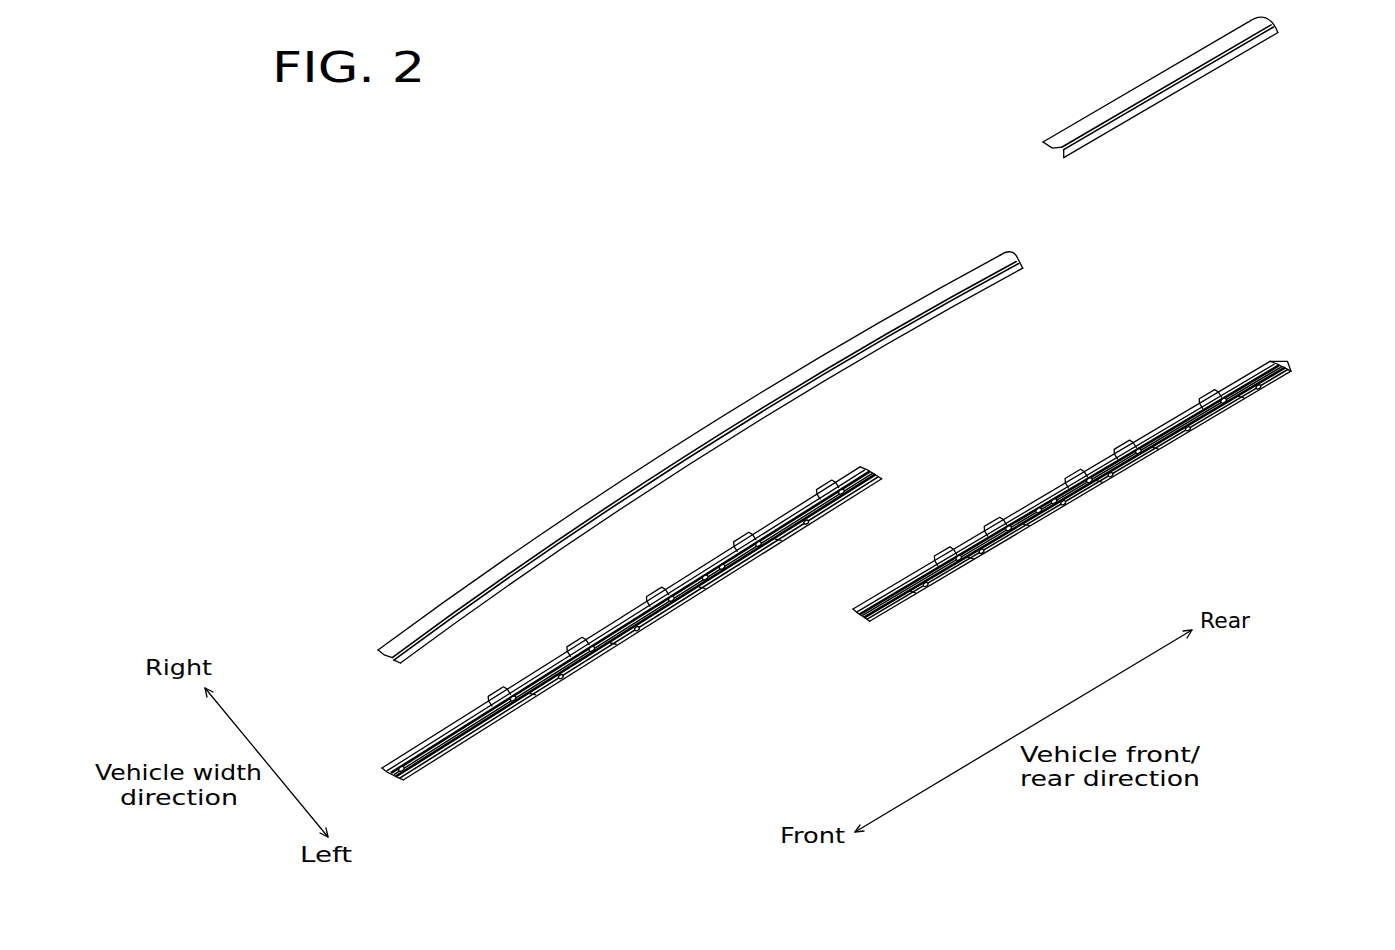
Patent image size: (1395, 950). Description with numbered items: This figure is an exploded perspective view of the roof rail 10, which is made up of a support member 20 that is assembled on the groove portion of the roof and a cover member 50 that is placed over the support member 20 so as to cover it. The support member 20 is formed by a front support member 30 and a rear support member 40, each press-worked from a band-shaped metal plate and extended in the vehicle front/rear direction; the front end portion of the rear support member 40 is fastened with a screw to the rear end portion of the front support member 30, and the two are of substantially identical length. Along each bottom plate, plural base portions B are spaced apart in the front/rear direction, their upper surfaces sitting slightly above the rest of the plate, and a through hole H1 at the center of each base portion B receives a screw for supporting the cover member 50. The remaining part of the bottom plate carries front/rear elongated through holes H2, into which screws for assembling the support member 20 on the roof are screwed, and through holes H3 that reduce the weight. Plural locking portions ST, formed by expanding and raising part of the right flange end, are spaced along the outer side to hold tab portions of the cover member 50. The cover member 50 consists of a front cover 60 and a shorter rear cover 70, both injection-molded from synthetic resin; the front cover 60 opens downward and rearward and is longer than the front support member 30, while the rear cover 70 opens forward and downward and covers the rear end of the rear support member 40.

The roof rail 10 is at (852, 143).
The support member 20 is at (878, 726).
The front support member 30 is at (775, 648).
The rear support member 40 is at (857, 640).
The cover member 50 is at (1030, 80).
The front cover 60 is at (952, 207).
The rear cover 70 is at (1035, 128).
The locking portion ST is at (497, 690).
The through hole H1 is at (587, 640).
The through hole H2 is at (715, 565).
The through hole H3 is at (573, 677).
The base portion B is at (522, 708).